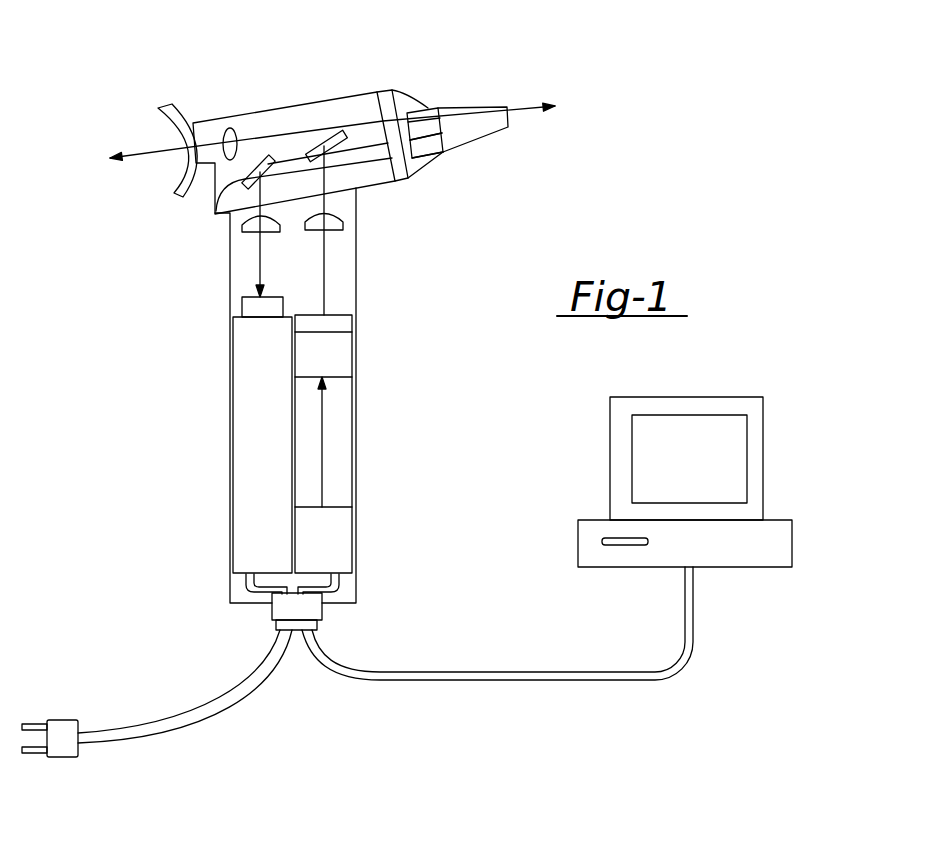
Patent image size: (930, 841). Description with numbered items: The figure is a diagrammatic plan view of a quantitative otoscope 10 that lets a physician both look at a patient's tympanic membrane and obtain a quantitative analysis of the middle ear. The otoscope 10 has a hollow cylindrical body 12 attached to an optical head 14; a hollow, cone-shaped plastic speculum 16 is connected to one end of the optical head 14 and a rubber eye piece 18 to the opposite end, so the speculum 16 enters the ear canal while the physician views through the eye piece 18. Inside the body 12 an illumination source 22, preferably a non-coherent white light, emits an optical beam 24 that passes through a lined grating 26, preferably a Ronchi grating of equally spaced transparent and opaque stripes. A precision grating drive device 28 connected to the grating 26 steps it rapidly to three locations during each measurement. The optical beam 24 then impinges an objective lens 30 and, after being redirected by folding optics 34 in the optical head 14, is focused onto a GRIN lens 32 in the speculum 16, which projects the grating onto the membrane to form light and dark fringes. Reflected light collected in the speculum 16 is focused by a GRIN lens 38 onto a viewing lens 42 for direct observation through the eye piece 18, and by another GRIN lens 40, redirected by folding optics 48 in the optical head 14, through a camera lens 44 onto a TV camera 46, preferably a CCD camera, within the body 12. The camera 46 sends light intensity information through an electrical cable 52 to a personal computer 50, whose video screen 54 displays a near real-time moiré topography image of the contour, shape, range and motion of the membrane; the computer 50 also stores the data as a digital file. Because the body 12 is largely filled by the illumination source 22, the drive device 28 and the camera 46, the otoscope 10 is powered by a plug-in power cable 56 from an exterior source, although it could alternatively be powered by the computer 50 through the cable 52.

The quantitative otoscope 10 is at (115, 366).
The hollow cylindrical body 12 is at (357, 281).
The optical head 14 is at (318, 103).
The speculum 16 is at (493, 108).
The eye piece 18 is at (176, 111).
The illumination source 22 is at (327, 546).
The optical beam 24 is at (322, 451).
The lined grating 26 is at (341, 321).
The precision grating drive device 28 is at (341, 353).
The objective lens 30 is at (336, 220).
The GRIN lens 32 is at (443, 133).
The folding optics 34 is at (386, 92).
The GRIN lens 38 is at (436, 109).
The GRIN lens 40 is at (437, 157).
The viewing lens 42 is at (238, 140).
The camera lens 44 is at (250, 235).
The TV camera 46 is at (258, 456).
The folding optics 48 is at (244, 186).
The personal computer 50 is at (730, 556).
The electrical cable 52 is at (506, 672).
The video screen 54 is at (738, 469).
The plug-in power cable 56 is at (68, 727).